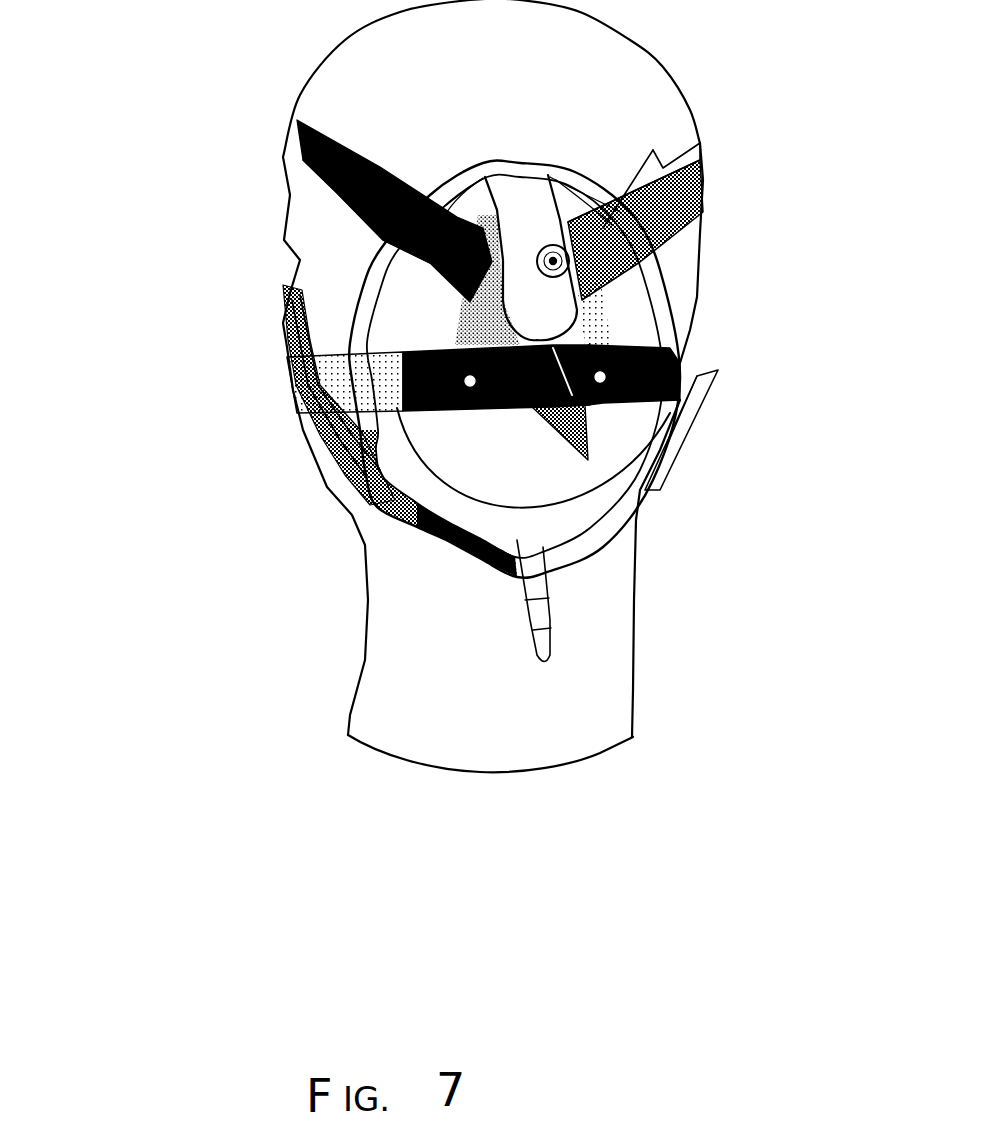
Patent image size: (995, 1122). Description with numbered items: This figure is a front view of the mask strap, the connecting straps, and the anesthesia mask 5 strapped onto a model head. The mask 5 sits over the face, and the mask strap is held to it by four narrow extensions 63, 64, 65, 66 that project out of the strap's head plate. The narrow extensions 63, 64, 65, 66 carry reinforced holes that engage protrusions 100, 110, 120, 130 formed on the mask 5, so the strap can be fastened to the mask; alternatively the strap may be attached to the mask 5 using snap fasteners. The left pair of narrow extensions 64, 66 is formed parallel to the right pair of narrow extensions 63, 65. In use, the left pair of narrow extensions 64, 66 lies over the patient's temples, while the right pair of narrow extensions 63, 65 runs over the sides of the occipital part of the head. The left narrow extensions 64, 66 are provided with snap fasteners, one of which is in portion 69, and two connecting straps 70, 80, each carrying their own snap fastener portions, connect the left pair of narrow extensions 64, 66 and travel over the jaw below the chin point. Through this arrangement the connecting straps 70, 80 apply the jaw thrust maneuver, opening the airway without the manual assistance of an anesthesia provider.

The mask 5 is at (643, 493).
The narrow extension 63 is at (697, 178).
The narrow extension 64 is at (650, 378).
The narrow extension 65 is at (297, 160).
The narrow extension 66 is at (355, 358).
The snap fastener portion 69 is at (353, 388).
The connecting strap 70 is at (335, 424).
The connecting strap 80 is at (340, 463).
The protrusion 100 is at (385, 245).
The protrusion 110 is at (443, 412).
The protrusion 120 is at (673, 360).
The protrusion 130 is at (620, 210).